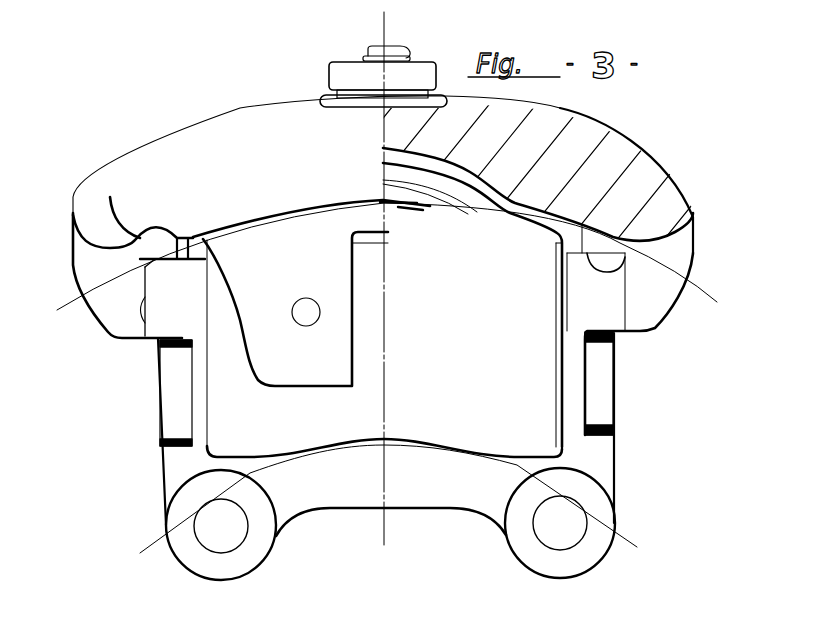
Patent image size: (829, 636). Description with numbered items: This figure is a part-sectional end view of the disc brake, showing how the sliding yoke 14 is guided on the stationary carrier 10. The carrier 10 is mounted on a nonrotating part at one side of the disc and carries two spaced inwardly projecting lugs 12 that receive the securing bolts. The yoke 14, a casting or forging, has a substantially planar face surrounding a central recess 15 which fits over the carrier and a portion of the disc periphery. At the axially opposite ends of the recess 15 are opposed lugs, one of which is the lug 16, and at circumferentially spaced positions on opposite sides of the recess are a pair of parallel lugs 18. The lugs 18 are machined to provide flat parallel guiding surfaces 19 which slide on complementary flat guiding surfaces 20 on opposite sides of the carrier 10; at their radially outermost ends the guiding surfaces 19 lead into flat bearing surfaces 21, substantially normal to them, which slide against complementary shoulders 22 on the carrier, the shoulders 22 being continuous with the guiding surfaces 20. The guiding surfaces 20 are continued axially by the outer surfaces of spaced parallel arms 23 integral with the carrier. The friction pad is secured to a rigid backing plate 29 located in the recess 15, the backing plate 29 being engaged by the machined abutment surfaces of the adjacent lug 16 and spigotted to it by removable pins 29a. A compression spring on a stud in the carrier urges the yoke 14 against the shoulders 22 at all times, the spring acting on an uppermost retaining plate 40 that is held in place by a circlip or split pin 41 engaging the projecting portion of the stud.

The carrier 10 is at (612, 393).
The lugs 12 is at (255, 552).
The yoke 14 is at (231, 128).
The central recess 15 is at (540, 220).
The lug 16 is at (157, 346).
The parallel lugs 18 is at (118, 318).
The guiding surfaces 19 is at (140, 286).
The guiding surfaces 20 is at (148, 322).
The bearing surfaces 21 is at (73, 266).
The shoulders 22 is at (80, 292).
The arms 23 is at (150, 338).
The backing plate 29 is at (225, 445).
The removable pins 29a is at (305, 318).
The retaining plate 40 is at (343, 72).
The split pin 41 is at (405, 50).